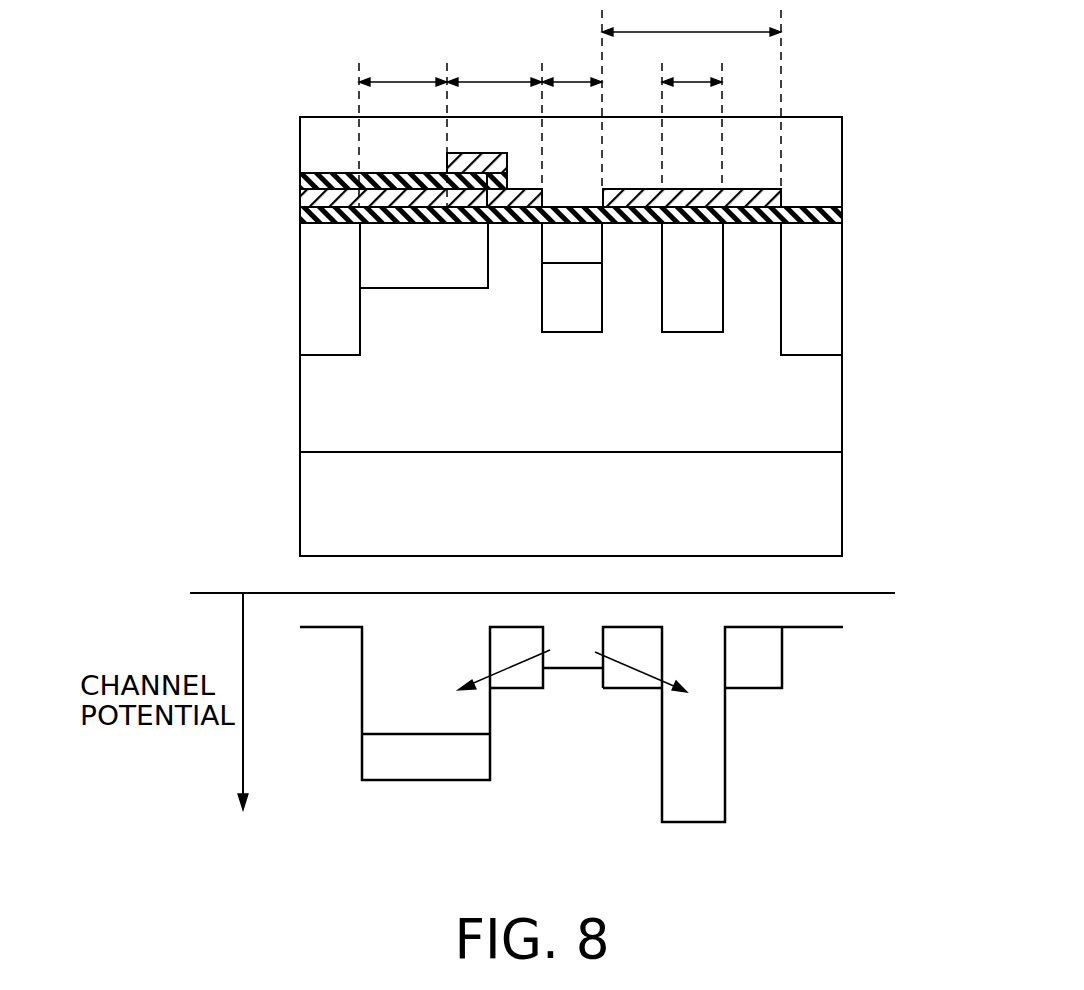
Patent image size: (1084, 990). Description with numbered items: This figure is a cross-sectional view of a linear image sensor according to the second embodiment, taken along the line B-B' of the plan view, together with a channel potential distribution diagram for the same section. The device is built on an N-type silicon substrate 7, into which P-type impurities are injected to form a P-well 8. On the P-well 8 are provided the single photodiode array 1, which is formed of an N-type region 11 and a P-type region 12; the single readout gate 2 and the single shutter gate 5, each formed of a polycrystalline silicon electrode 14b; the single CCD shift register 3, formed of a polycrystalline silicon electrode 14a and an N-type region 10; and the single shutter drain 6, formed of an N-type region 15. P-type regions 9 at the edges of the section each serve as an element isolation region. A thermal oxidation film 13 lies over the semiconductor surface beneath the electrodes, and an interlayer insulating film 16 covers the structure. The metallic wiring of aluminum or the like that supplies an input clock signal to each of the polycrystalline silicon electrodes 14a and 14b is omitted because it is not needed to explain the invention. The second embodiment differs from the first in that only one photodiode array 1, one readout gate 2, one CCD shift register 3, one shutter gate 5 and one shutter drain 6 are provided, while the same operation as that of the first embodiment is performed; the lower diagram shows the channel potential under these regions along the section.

The photodiode array 1 is at (572, 64).
The readout gate 2 is at (494, 64).
The CCD shift register 3 is at (403, 64).
The shutter gate 5 is at (691, 18).
The shutter drain 6 is at (692, 64).
The N-type silicon substrate 7 is at (317, 495).
The P-well 8 is at (317, 395).
The P-type region 9 is at (317, 336).
The N-type region 10 is at (398, 280).
The N-type region 11 is at (586, 323).
The P-type region 12 is at (553, 248).
The thermal oxidation film 13 is at (823, 207).
The polycrystalline silicon electrode 14a is at (318, 195).
The polycrystalline silicon electrode 14b is at (450, 163).
The N-type region 15 is at (700, 323).
The interlayer insulating film 16 is at (815, 130).